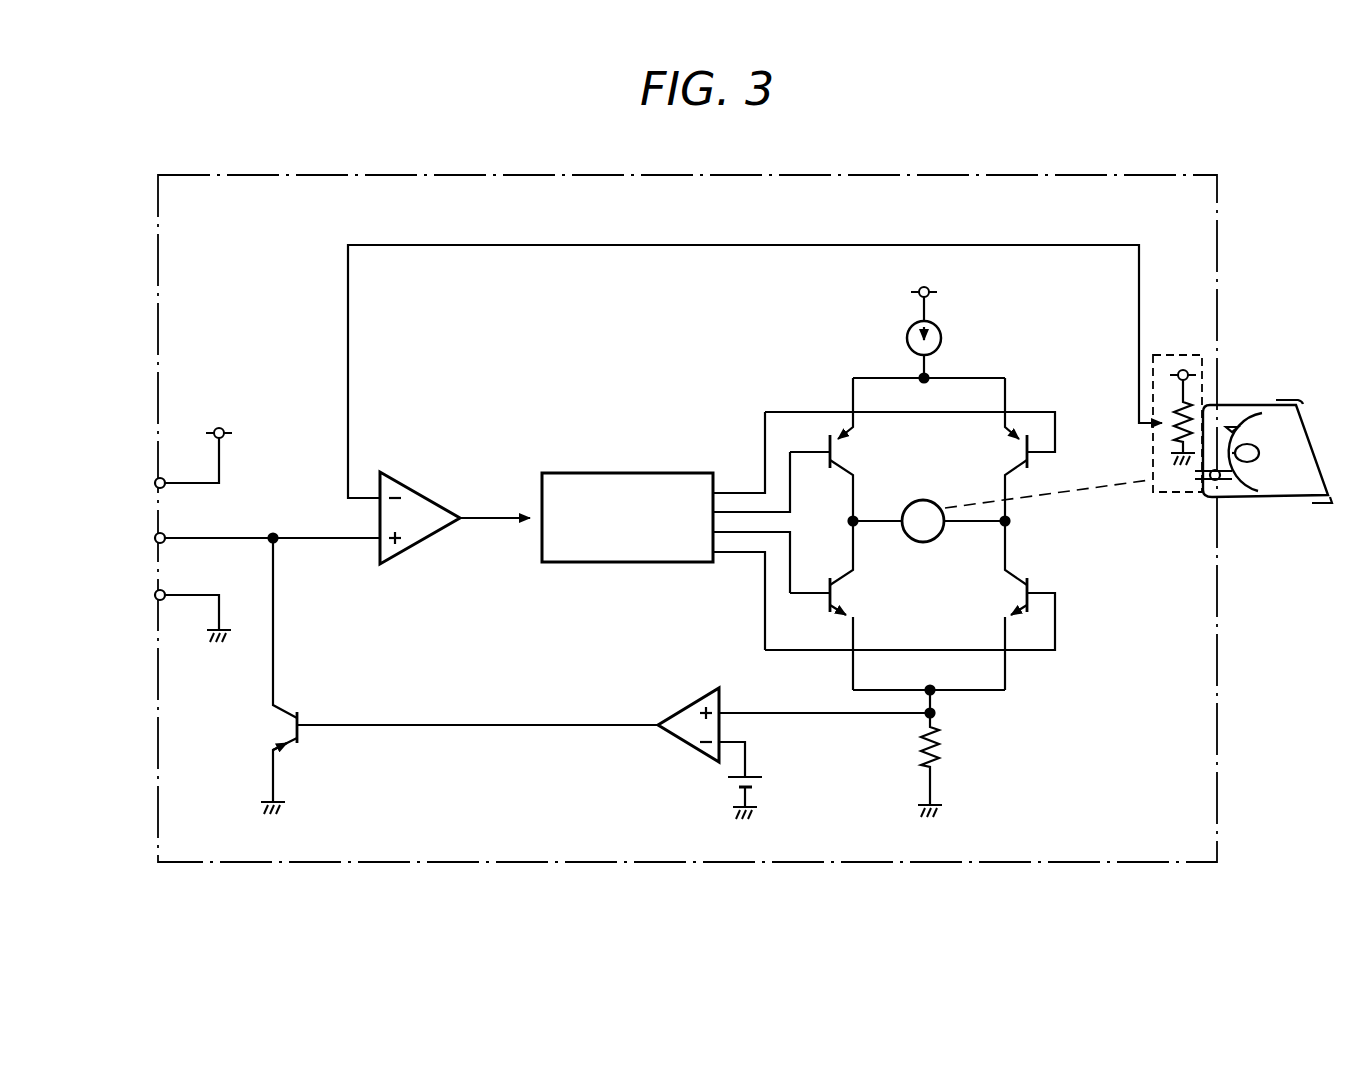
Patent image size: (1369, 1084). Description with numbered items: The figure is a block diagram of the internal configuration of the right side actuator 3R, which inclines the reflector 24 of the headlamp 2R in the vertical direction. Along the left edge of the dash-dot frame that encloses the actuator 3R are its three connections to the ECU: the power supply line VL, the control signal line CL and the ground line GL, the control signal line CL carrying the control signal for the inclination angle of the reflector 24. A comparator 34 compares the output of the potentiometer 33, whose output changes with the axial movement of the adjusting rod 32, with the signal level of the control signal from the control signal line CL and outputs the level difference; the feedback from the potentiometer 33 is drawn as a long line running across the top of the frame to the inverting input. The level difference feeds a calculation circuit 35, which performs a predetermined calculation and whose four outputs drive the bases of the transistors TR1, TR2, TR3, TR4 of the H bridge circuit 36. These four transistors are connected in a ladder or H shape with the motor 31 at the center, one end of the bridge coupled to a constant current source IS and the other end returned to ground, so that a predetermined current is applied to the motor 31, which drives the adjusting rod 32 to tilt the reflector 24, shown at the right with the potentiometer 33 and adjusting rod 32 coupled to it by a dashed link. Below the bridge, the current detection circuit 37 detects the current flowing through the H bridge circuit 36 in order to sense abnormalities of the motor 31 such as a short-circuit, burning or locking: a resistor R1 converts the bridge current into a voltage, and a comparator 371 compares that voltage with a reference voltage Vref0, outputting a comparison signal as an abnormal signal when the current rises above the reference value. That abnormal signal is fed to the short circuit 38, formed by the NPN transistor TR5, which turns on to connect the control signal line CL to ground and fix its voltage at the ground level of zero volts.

The actuator 3R is at (1020, 172).
The headlamp 2R is at (1265, 450).
The potentiometer 33 is at (1185, 355).
The adjusting rod 32 is at (1218, 482).
The reflector 24 is at (1268, 480).
The motor 31 is at (935, 540).
The comparator 34 is at (422, 497).
The calculation circuit 35 is at (670, 473).
The H bridge circuit 36 is at (910, 491).
The current detection circuit 37 is at (650, 813).
The short circuit 38 is at (262, 735).
The comparator 371 is at (686, 748).
The constant current source IS is at (906, 338).
The transistor TR1 is at (844, 450).
The transistor TR2 is at (1010, 452).
The transistor TR3 is at (845, 594).
The transistor TR4 is at (1012, 594).
The transistor TR5 is at (282, 727).
The resistor R1 is at (942, 752).
The reference voltage Vref0 is at (778, 792).
The power supply line VL is at (153, 483).
The control signal line CL is at (153, 538).
The ground line GL is at (153, 595).